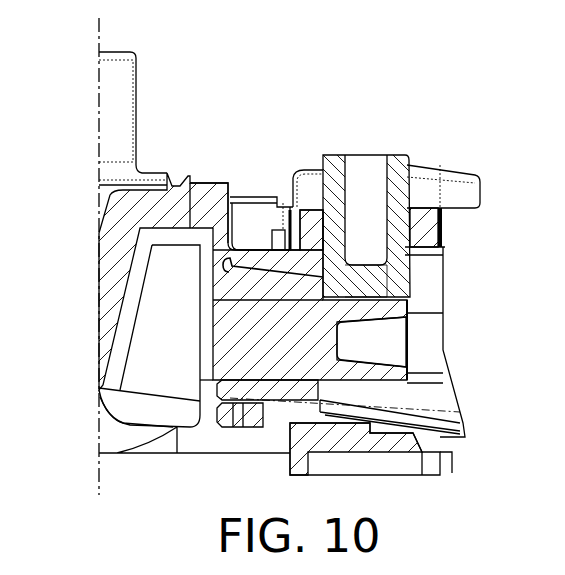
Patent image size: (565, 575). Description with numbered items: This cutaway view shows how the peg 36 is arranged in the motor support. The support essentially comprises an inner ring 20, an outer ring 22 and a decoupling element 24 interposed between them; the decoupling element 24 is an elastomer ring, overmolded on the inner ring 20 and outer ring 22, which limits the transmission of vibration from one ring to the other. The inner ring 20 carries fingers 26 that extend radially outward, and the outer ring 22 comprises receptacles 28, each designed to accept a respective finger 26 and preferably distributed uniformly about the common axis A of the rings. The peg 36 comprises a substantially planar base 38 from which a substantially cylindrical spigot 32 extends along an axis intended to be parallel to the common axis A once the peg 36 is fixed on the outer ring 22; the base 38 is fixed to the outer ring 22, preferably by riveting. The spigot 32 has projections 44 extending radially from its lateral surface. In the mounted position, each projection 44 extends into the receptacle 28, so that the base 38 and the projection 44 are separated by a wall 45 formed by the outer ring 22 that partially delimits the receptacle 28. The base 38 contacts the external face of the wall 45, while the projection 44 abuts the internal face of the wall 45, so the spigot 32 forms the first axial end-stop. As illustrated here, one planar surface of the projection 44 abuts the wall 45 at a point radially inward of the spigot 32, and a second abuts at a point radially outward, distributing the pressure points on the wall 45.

The inner ring 20 is at (103, 342).
The outer ring 22 is at (447, 227).
The decoupling element 24 is at (208, 190).
The finger 26 is at (388, 338).
The receptacle 28 is at (430, 334).
The spigot 32 is at (387, 282).
The peg 36 is at (296, 150).
The base 38 is at (433, 180).
The projection 44 is at (410, 253).
The wall 45 is at (297, 207).
The axis A is at (97, 48).